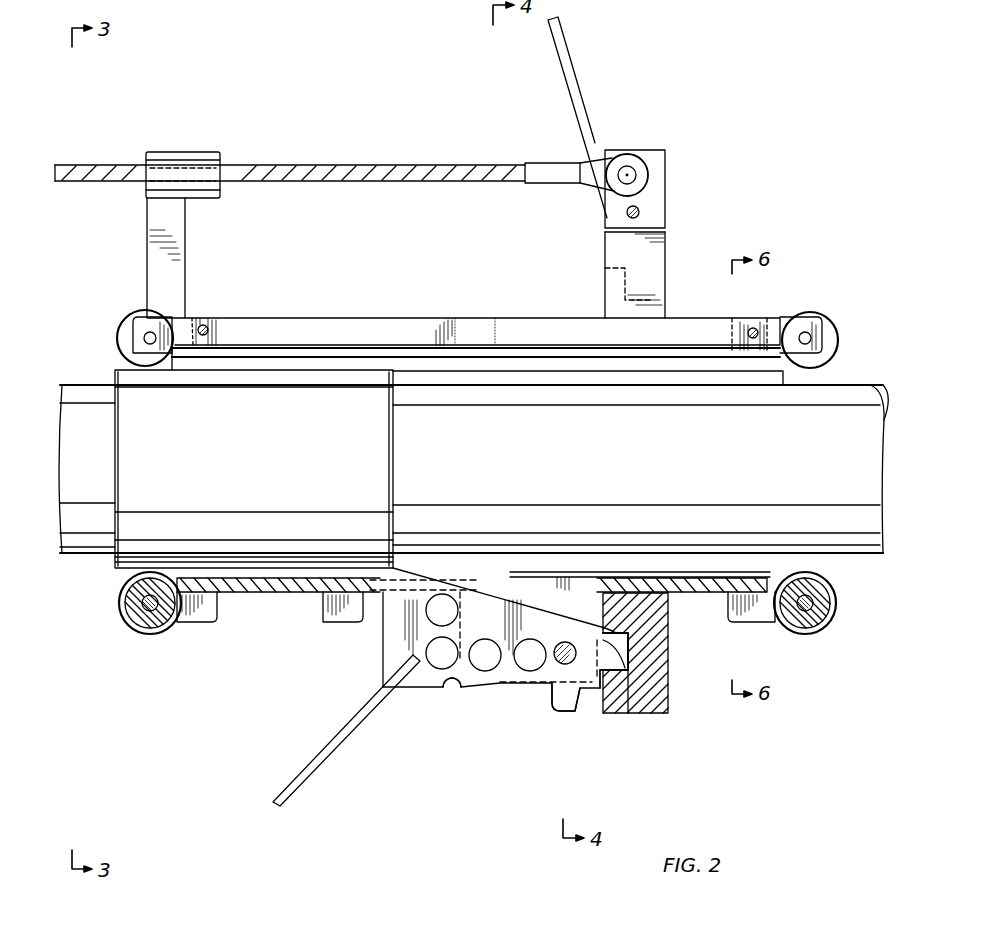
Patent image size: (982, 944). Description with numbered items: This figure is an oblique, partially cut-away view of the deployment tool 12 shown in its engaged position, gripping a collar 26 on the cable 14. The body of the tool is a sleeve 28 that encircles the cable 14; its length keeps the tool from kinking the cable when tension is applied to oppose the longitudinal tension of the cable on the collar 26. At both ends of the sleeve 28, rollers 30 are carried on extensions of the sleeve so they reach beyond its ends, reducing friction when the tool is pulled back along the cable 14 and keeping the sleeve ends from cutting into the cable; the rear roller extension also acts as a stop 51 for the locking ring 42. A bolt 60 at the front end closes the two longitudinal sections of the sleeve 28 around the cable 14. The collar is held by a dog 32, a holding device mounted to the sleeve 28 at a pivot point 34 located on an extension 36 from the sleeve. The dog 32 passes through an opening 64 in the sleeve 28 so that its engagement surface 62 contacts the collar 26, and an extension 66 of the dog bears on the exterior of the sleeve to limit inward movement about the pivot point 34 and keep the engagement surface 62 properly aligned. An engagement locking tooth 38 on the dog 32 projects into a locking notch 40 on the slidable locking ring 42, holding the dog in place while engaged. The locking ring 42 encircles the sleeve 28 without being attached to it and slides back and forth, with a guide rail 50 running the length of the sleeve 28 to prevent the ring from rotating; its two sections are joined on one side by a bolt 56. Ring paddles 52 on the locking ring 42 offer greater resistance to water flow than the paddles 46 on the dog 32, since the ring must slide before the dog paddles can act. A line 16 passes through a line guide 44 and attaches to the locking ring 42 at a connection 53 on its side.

The deployment tool 12 is at (700, 594).
The cable 14 is at (82, 382).
The line 16 is at (100, 162).
The collar 26 is at (130, 552).
The sleeve 28 is at (241, 593).
The rollers 30 is at (130, 313).
The dog 32 is at (421, 703).
The pivot point 34 is at (557, 664).
The extension 36 is at (469, 692).
The engagement locking tooth 38 is at (601, 692).
The locking notch 40 is at (612, 278).
The locking ring 42 is at (661, 717).
The line guide 44 is at (183, 150).
The paddles 46 is at (292, 790).
The guide rail 50 is at (341, 317).
The stop 51 is at (794, 328).
The ring paddles 52 is at (577, 62).
The connection 53 is at (633, 149).
The bolt 56 is at (643, 213).
The bolt 60 is at (208, 327).
The engagement surface 62 is at (366, 620).
The opening 64 is at (383, 655).
The extension 66 is at (322, 612).